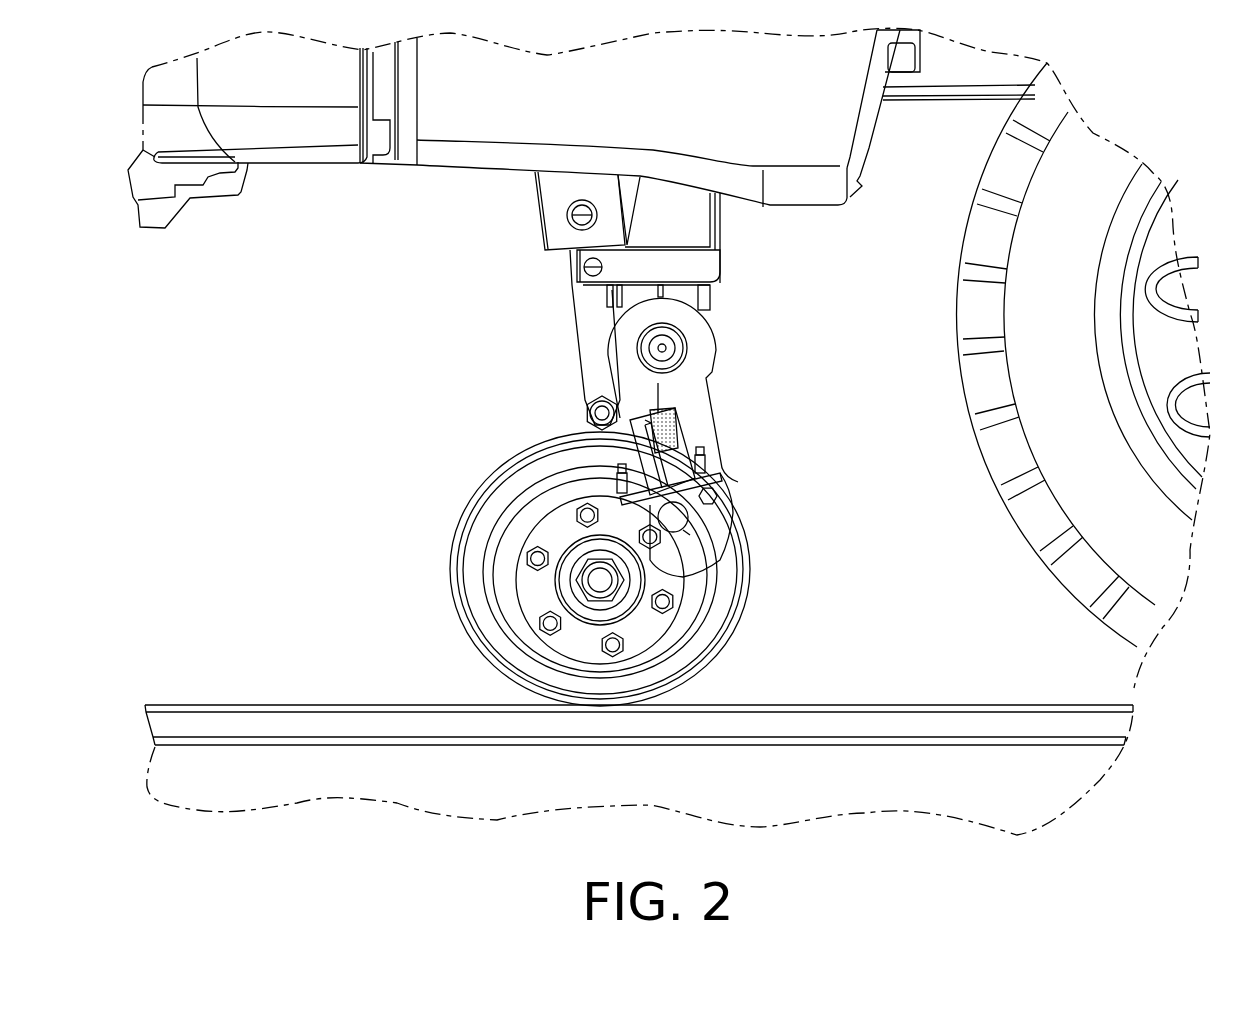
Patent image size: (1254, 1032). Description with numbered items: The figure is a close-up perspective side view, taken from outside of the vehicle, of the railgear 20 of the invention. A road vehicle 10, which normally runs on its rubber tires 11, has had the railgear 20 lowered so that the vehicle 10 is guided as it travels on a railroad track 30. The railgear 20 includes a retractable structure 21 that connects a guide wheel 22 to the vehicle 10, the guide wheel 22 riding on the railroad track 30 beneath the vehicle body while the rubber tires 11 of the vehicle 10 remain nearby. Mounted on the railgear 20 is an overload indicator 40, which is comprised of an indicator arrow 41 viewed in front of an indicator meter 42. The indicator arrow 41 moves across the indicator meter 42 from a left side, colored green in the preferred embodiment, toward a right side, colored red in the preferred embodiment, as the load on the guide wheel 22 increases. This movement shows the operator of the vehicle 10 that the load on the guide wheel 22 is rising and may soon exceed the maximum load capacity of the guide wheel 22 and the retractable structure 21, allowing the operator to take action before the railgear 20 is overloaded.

The road vehicle 10 is at (365, 197).
The rubber tires 11 is at (940, 278).
The railgear 20 is at (624, 439).
The retractable structure 21 is at (730, 322).
The guide wheel 22 is at (447, 613).
The railroad track 30 is at (903, 703).
The overload indicator 40 is at (672, 460).
The indicator arrow 41 is at (700, 517).
The indicator meter 42 is at (673, 417).